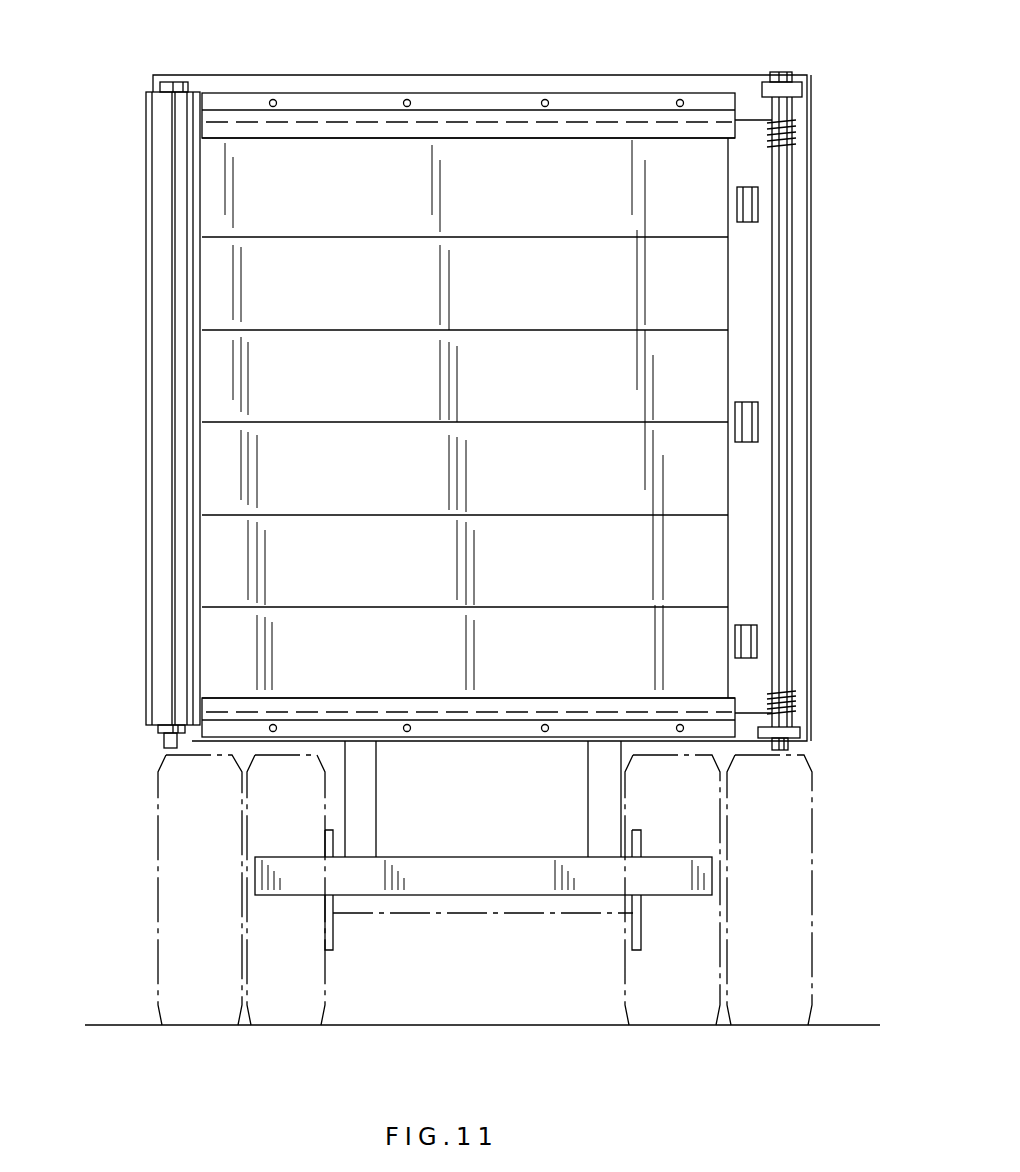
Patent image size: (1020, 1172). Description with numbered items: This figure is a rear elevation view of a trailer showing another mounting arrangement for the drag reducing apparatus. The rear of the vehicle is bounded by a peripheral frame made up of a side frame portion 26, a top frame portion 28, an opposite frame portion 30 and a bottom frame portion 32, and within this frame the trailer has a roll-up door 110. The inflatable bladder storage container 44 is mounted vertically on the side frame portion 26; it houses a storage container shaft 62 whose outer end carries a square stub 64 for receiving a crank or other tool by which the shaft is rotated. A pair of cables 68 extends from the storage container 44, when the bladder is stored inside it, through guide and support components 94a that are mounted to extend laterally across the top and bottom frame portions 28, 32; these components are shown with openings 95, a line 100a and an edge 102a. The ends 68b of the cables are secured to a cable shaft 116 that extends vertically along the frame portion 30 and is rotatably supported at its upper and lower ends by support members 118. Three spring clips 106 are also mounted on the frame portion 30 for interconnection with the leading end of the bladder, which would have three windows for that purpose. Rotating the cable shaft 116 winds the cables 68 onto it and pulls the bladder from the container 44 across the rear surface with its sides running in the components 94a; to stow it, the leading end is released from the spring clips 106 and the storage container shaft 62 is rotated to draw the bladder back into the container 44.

The side frame portion 26 is at (153, 85).
The top frame portion 28 is at (493, 87).
The frame portion 30 is at (796, 313).
The bottom frame portion 32 is at (743, 742).
The storage container 44 is at (148, 459).
The storage container shaft 62 is at (154, 735).
The square stubs 64 is at (164, 742).
The cables 68 is at (753, 118).
The cable ends 68b is at (793, 130).
The support and guide components 94a is at (435, 93).
The fastener holes 95 is at (310, 102).
The hinge line 100a is at (588, 122).
The panel edge 102a is at (468, 138).
The spring clips 106 is at (755, 203).
The roll-up door 110 is at (540, 296).
The cable shaft 116 is at (790, 528).
The support members 118 is at (797, 88).